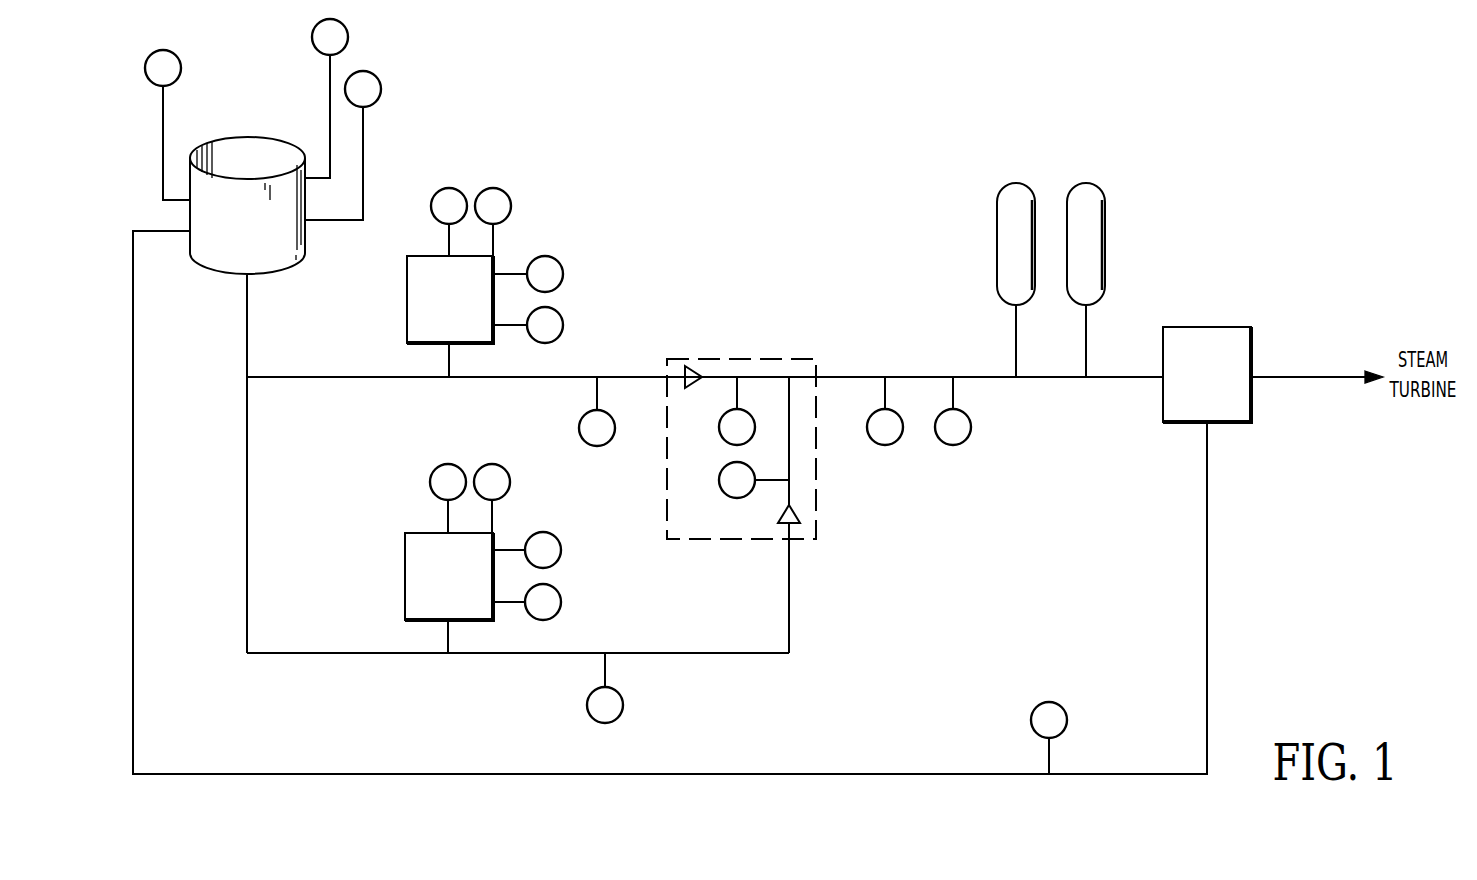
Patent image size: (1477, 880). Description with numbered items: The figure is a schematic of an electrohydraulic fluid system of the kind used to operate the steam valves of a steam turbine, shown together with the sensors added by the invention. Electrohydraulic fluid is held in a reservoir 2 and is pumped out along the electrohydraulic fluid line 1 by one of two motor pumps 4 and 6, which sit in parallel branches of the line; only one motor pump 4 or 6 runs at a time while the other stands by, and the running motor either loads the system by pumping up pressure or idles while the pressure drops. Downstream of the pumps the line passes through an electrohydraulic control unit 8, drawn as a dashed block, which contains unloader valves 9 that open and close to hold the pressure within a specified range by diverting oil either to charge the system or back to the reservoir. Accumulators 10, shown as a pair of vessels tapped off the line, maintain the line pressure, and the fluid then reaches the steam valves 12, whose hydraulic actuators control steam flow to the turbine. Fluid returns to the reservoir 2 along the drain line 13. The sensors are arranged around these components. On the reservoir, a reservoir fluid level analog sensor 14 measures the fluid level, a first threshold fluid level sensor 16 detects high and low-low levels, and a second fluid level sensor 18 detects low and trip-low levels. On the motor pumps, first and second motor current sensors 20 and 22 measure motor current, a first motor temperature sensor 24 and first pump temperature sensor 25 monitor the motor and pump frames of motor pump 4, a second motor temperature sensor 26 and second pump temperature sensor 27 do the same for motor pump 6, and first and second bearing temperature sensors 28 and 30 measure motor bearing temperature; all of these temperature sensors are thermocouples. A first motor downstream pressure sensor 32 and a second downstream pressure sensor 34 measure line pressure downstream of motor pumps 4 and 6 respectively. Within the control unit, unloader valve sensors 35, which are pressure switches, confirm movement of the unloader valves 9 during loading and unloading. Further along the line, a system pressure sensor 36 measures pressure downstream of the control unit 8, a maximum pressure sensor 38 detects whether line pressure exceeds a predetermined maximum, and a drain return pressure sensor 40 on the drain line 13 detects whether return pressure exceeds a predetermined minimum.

The electrohydraulic fluid line 1 is at (312, 376).
The reservoir 2 is at (243, 137).
The motor pump 4 is at (407, 288).
The motor pump 6 is at (405, 572).
The electrohydraulic control unit 8 is at (758, 358).
The unloader valves 9 is at (690, 365).
The accumulators 10 is at (1020, 183).
The steam valves 12 is at (1201, 327).
The drain line 13 is at (1207, 620).
The reservoir fluid level analog sensor 14 is at (167, 125).
The first threshold fluid level sensor 16 is at (326, 98).
The second fluid level sensor 18 is at (343, 145).
The first motor current sensor 20 is at (449, 222).
The second motor current sensor 22 is at (448, 498).
The first motor temperature sensor 24 is at (528, 274).
The first pump temperature sensor 25 is at (528, 325).
The second motor temperature sensor 26 is at (527, 550).
The second pump temperature sensor 27 is at (527, 602).
The first bearing temperature sensor 28 is at (493, 222).
The second bearing temperature sensor 30 is at (492, 498).
The first motor downstream pressure sensor 32 is at (597, 411).
The second downstream pressure sensor 34 is at (605, 688).
The unloader valve sensors 35 is at (754, 437).
The system pressure sensor 36 is at (885, 411).
The maximum pressure sensor 38 is at (953, 411).
The drain return pressure sensor 40 is at (1049, 738).